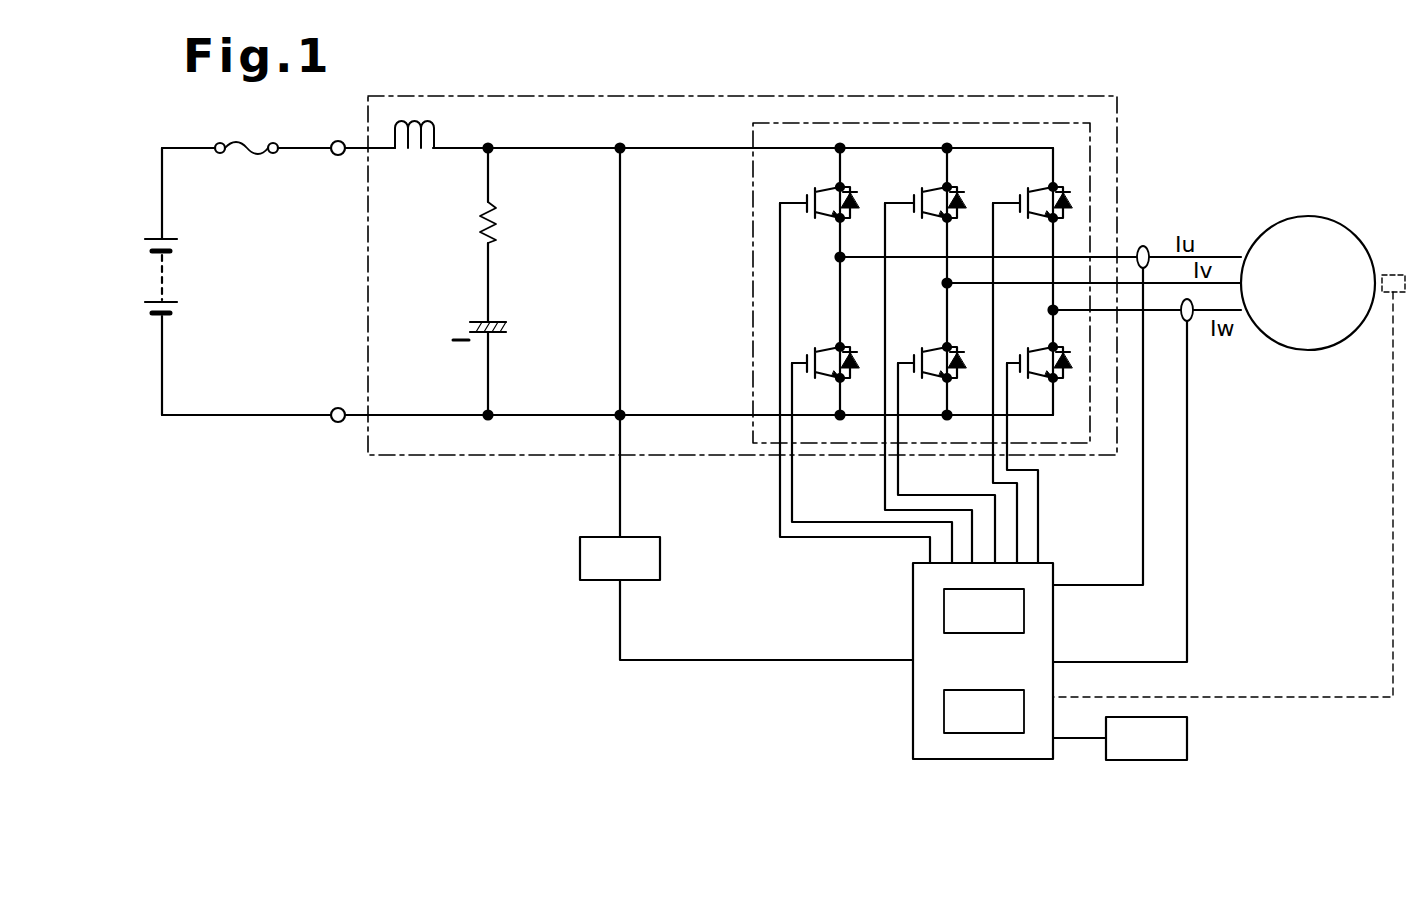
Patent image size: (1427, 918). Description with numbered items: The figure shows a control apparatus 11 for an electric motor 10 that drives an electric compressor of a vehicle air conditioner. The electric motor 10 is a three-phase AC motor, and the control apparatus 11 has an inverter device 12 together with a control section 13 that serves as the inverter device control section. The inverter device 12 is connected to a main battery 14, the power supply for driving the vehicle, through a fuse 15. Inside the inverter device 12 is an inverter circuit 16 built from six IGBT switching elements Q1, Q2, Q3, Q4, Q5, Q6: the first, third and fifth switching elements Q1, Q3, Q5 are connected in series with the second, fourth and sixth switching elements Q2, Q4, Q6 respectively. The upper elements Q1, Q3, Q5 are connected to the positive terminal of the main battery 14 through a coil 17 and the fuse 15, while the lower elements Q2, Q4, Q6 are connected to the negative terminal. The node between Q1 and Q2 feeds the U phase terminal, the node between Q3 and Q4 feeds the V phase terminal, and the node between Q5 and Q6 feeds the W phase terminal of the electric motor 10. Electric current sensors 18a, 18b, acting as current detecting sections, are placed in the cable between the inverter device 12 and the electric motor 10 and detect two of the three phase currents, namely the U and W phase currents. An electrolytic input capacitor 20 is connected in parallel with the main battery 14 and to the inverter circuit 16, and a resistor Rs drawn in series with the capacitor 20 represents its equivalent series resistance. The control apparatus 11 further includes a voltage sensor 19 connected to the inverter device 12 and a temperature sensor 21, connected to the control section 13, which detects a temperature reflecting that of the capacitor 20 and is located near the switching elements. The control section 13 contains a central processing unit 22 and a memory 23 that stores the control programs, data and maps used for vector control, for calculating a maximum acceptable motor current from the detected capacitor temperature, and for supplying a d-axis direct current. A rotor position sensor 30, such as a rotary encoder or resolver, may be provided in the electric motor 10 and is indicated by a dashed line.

The electric motor 10 is at (1318, 340).
The control apparatus 11 is at (1020, 817).
The inverter device 12 is at (1117, 135).
The control section 13 is at (991, 688).
The main battery 14 is at (172, 238).
The fuse 15 is at (243, 152).
The inverter circuit 16 is at (751, 232).
The coil 17 is at (408, 152).
The electric current sensor 18a is at (1146, 246).
The electric current sensor 18b is at (1190, 322).
The voltage sensor 19 is at (650, 582).
The capacitor 20 is at (497, 334).
The temperature sensor 21 is at (1147, 752).
The CPU 22 is at (960, 635).
The memory 23 is at (1008, 689).
The rotor position sensor 30 is at (1393, 273).
The resistor Rs is at (500, 240).
The first switching element Q1 is at (830, 186).
The second switching element Q2 is at (830, 346).
The third switching element Q3 is at (937, 186).
The fourth switching element Q4 is at (937, 346).
The fifth switching element Q5 is at (1043, 186).
The sixth switching element Q6 is at (1043, 346).